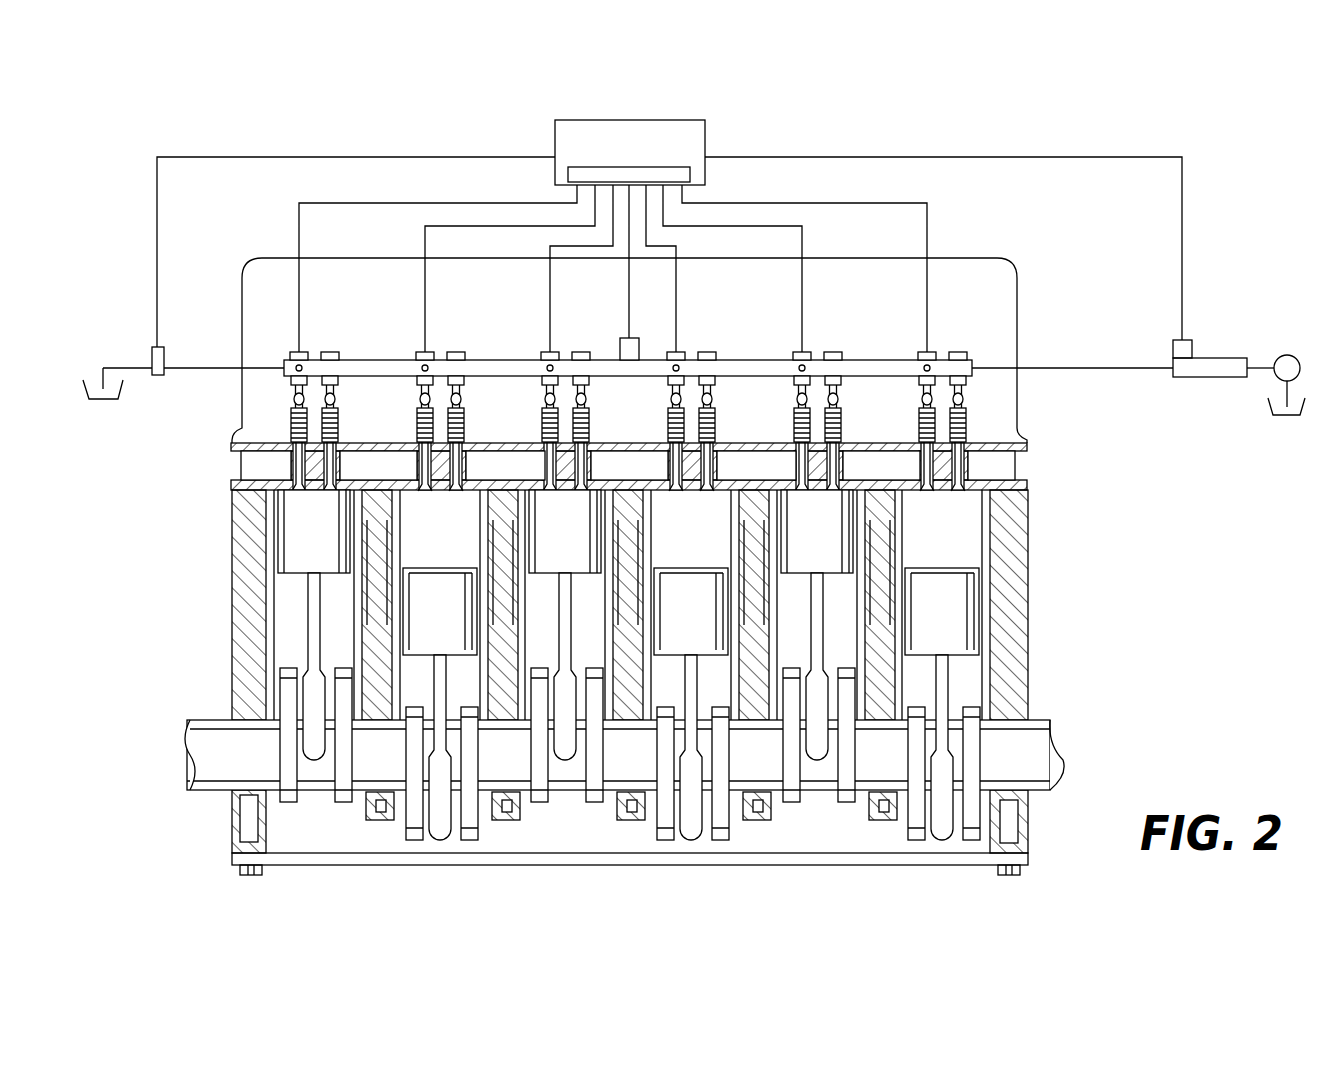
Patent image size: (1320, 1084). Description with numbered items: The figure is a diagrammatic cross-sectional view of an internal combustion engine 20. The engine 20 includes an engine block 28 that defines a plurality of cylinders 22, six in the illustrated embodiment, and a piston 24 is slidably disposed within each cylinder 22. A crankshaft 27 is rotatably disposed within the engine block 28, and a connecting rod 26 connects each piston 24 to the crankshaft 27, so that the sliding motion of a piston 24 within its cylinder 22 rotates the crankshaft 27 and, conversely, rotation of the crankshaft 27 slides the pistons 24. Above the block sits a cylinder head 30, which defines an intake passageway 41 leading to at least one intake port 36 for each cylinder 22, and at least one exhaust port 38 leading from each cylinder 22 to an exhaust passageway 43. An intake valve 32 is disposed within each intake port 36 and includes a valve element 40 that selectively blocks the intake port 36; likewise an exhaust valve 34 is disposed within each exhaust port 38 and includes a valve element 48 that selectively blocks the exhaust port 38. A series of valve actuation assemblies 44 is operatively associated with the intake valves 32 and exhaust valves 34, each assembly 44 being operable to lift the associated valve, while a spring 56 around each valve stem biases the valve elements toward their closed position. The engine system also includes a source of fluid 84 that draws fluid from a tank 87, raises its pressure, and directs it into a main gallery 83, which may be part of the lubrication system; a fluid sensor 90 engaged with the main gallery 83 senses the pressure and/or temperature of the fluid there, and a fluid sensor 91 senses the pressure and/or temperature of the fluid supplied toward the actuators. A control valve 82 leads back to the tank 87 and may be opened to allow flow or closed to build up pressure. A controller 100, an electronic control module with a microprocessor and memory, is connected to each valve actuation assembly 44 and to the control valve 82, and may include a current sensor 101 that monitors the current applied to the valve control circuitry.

The engine 20 is at (1073, 258).
The cylinder 22 is at (325, 627).
The piston 24 is at (304, 562).
The connecting rod 26 is at (308, 640).
The crankshaft 27 is at (213, 758).
The engine block 28 is at (266, 472).
The cylinder head 30 is at (1028, 466).
The intake valve 32 is at (344, 442).
The exhaust valve 34 is at (540, 442).
The intake port 36 is at (313, 540).
The exhaust port 38 is at (326, 493).
The valve element 40 is at (348, 495).
The intake passageway 41 is at (365, 477).
The exhaust passageway 43 is at (492, 477).
The valve actuation assembly 44 is at (300, 350).
The valve element 48 is at (248, 465).
The spring 56 is at (291, 396).
The control valve 82 is at (152, 352).
The main gallery 83 is at (1213, 358).
The source of fluid 84 is at (1290, 355).
The tank 87 is at (87, 397).
The fluid sensor 90 is at (1190, 342).
The fluid sensor 91 is at (635, 340).
The controller 100 is at (611, 156).
The current sensor 101 is at (681, 167).